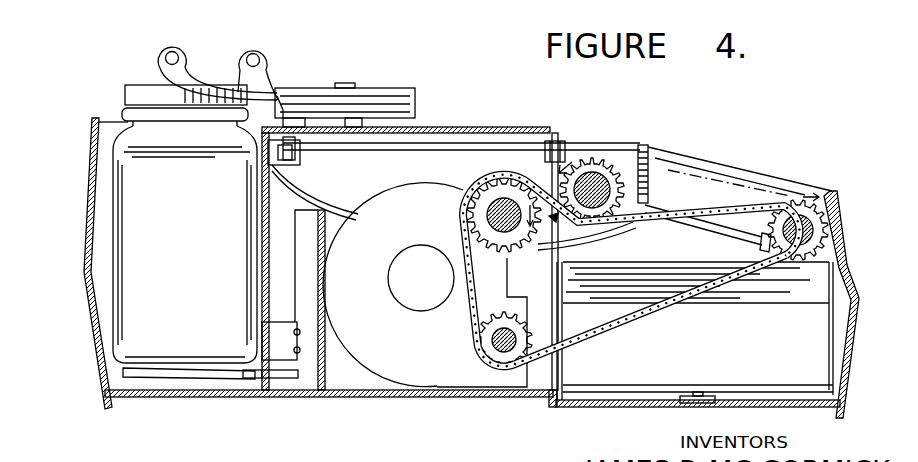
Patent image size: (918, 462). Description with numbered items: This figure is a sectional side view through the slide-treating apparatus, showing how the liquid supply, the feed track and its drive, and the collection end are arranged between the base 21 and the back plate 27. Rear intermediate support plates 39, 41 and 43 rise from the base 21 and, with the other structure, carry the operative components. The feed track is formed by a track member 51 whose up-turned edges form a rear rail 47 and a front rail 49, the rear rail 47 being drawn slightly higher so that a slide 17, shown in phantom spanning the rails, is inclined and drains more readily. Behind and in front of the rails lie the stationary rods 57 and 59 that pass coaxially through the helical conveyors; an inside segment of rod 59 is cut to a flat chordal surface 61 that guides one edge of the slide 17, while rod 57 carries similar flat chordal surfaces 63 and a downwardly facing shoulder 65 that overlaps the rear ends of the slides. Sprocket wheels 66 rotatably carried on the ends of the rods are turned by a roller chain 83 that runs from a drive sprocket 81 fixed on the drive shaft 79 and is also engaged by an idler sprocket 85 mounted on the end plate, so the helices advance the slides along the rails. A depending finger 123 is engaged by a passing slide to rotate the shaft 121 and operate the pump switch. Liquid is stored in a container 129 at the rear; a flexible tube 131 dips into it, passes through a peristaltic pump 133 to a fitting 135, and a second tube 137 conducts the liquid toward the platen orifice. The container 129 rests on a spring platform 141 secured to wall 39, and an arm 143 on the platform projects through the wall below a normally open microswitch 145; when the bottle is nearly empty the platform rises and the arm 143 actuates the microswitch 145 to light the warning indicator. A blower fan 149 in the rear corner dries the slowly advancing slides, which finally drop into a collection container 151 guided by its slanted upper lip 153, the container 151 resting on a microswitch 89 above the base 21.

The slide 17 is at (730, 183).
The base 21 is at (328, 395).
The back plate 27 is at (92, 207).
The rear intermediate support plate 39 is at (262, 222).
The rear intermediate support plate 41 is at (328, 337).
The rear intermediate support plate 43 is at (558, 320).
The rear rail 47 is at (628, 214).
The front rail 49 is at (762, 243).
The track member 51 is at (680, 230).
The stationary rod 57 is at (592, 172).
The stationary rod 59 is at (830, 230).
The flat chordal surface 61 is at (782, 220).
The flat chordal surface 63 is at (574, 215).
The downwardly facing shoulder 65 is at (600, 183).
The sprocket wheel 66 is at (583, 172).
The drive shaft 79 is at (495, 200).
The drive sprocket 81 is at (477, 212).
The roller chain 83 is at (655, 320).
The idler sprocket 85 is at (490, 355).
The microswitch 89 is at (688, 400).
The shaft 121 is at (440, 147).
The finger 123 is at (648, 155).
The container 129 is at (137, 287).
The flexible tube 131 is at (197, 102).
The peristaltic pump 133 is at (388, 97).
The fitting 135 is at (290, 112).
The second tube 137 is at (308, 190).
The spring platform 141 is at (168, 380).
The arm 143 is at (250, 372).
The microswitch 145 is at (281, 352).
The blower fan 149 is at (418, 367).
The collection container 151 is at (812, 364).
The slanted upper lip 153 is at (803, 288).